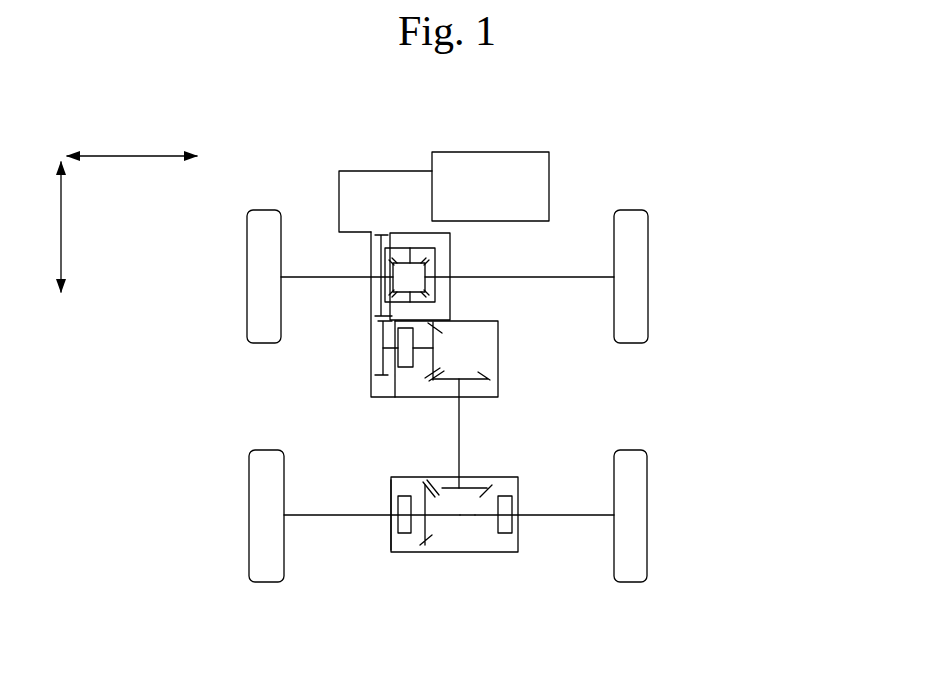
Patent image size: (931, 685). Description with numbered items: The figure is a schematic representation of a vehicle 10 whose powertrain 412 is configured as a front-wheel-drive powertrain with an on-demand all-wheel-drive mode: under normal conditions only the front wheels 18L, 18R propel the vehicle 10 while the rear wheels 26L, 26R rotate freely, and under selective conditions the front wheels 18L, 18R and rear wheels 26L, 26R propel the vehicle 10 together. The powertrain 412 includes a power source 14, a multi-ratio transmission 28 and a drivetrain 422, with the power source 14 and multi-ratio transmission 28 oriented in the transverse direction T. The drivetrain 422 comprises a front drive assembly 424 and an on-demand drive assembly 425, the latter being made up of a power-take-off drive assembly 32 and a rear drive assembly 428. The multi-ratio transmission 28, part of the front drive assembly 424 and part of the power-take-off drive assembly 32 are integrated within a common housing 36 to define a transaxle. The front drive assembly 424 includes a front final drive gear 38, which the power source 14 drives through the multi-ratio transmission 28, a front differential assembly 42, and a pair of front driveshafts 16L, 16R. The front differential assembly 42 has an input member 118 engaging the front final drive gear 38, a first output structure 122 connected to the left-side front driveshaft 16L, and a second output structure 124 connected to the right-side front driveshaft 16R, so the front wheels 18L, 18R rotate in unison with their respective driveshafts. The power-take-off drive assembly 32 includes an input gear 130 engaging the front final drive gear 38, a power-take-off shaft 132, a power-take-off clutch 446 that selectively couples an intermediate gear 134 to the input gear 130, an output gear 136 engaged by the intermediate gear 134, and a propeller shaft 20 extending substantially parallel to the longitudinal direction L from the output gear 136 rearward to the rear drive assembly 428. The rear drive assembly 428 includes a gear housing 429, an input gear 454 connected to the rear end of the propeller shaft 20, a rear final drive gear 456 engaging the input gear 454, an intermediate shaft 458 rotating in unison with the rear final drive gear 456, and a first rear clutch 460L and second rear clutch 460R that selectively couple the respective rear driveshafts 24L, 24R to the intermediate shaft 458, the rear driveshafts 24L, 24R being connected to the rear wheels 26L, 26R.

The vehicle 10 is at (730, 384).
The power source 14 is at (495, 158).
The left-side front driveshaft 16L is at (297, 278).
The right-side front driveshaft 16R is at (603, 275).
The left front wheel 18L is at (247, 318).
The right front wheel 18R is at (648, 310).
The propeller shaft 20 is at (459, 443).
The left rear driveshaft 24L is at (315, 517).
The right rear driveshaft 24R is at (575, 517).
The left rear wheel 26L is at (250, 535).
The right rear wheel 26R is at (648, 552).
The multi-ratio transmission 28 is at (373, 176).
The power-take-off drive assembly 32 is at (522, 398).
The common housing 36 is at (339, 194).
The front final drive gear 38 is at (383, 292).
The front differential assembly 42 is at (438, 258).
The input member 118 is at (410, 248).
The first output structure 122 is at (388, 265).
The second output structure 124 is at (427, 290).
The input gear 130 is at (372, 365).
The power-take-off shaft 132 is at (405, 367).
The intermediate gear 134 is at (433, 338).
The output gear 136 is at (452, 377).
The powertrain 412 is at (563, 135).
The drivetrain 422 is at (458, 600).
The front drive assembly 424 is at (540, 248).
The on-demand drive assembly 425 is at (612, 399).
The rear drive assembly 428 is at (562, 477).
The gear housing 429 is at (388, 493).
The power-take-off clutch 446 is at (392, 350).
The input gear 454 is at (442, 488).
The rear final drive gear 456 is at (427, 523).
The intermediate shaft 458 is at (467, 517).
The first rear clutch 460L is at (405, 535).
The second rear clutch 460R is at (507, 535).
The transverse direction T is at (132, 156).
The longitudinal direction L is at (60, 224).